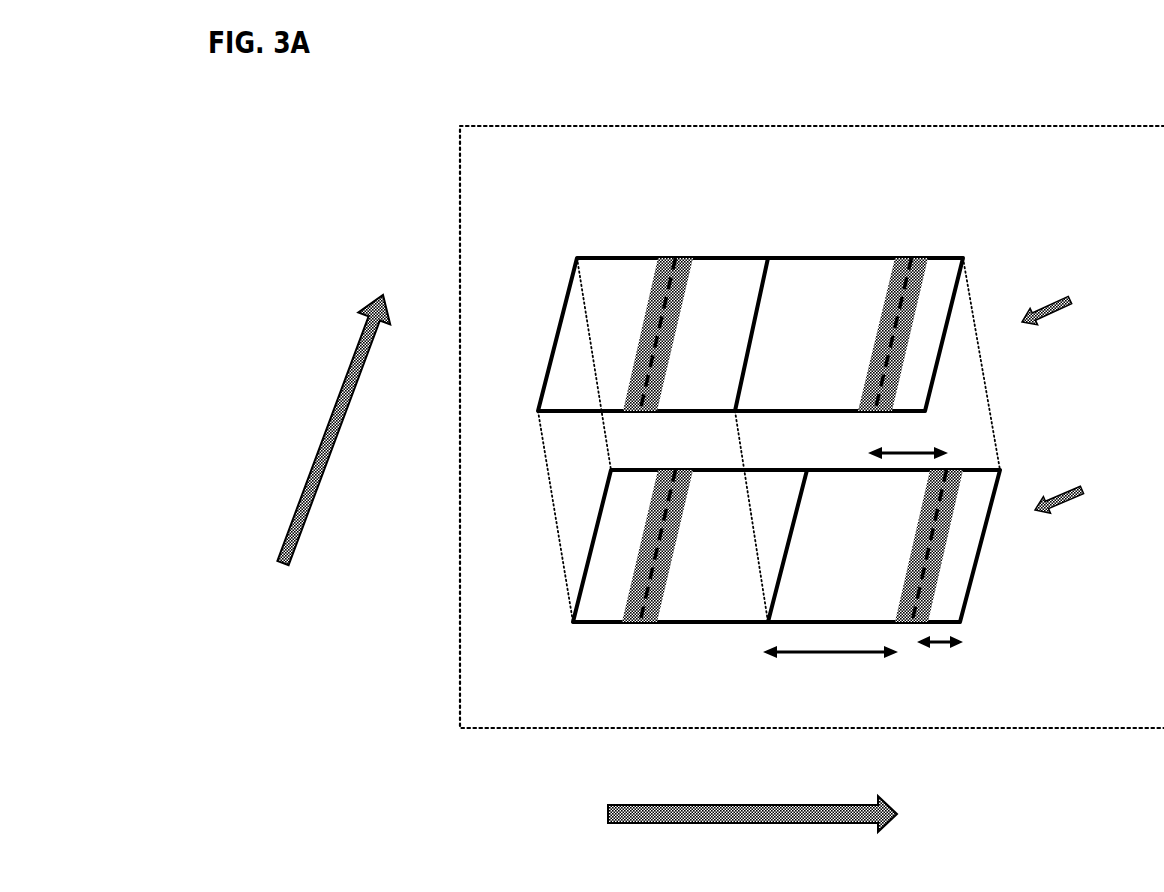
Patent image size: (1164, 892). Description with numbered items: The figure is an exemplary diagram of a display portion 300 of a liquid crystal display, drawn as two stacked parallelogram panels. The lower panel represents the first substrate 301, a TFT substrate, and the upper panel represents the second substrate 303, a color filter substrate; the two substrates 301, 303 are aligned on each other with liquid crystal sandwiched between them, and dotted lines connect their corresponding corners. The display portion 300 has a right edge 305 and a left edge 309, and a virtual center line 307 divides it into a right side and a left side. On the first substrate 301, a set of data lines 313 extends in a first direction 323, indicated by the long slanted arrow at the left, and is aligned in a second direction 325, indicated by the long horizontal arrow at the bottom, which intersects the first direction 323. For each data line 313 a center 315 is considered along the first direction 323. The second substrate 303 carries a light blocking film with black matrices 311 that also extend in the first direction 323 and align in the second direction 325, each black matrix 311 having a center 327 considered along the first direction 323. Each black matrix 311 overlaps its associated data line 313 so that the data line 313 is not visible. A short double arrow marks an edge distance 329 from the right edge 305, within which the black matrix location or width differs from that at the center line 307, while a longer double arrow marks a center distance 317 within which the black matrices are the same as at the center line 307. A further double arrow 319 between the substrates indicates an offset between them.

The display portion 300 is at (925, 160).
The first substrate 301 is at (1079, 496).
The second substrate 303 is at (1066, 310).
The right edge 305 is at (943, 333).
The center line 307 is at (754, 330).
The left edge 309 is at (557, 334).
The black matrix 311 is at (878, 334).
The data line 313 is at (914, 545).
The center of data line 315 is at (908, 624).
The center distance 317 is at (807, 655).
The offset distance 319 is at (909, 445).
The first direction 323 is at (315, 443).
The second direction 325 is at (737, 826).
The center of black matrix 327 is at (912, 258).
The edge distance 329 is at (960, 643).